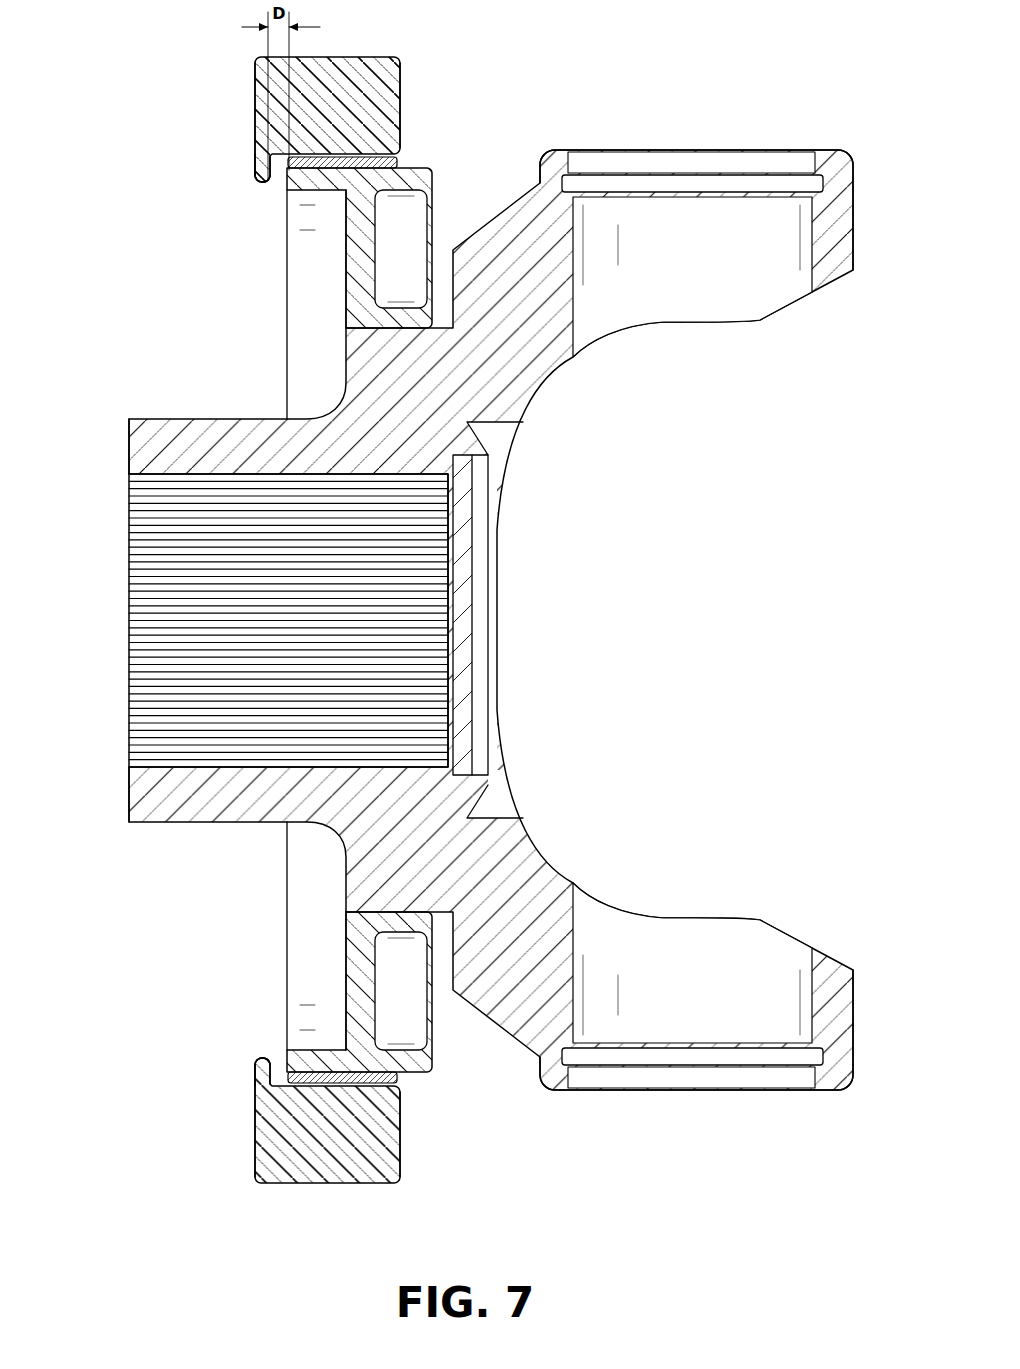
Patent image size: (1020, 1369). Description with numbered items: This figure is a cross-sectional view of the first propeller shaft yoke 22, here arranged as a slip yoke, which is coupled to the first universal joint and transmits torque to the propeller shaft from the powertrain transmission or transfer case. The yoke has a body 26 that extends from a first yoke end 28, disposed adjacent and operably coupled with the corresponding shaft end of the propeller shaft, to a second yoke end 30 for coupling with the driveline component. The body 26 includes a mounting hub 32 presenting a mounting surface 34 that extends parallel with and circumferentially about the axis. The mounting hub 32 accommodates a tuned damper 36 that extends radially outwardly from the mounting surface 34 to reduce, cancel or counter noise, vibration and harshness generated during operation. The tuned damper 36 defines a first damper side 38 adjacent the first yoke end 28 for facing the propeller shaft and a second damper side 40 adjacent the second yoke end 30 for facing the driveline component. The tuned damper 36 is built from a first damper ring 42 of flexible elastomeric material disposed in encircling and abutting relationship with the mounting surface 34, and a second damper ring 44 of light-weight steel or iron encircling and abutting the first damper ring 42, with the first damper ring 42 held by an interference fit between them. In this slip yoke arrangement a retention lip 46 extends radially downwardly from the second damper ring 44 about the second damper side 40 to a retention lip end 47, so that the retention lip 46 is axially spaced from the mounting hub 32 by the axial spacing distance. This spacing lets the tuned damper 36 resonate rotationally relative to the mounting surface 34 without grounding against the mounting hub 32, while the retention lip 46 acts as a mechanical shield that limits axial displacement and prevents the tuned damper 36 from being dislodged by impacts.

The first propeller shaft yoke 22 is at (183, 418).
The body 26 is at (210, 800).
The first yoke end 28 is at (855, 215).
The second yoke end 30 is at (129, 793).
The mounting hub 32 is at (365, 270).
The mounting surface 34 is at (370, 618).
The tuned damper 36 is at (322, 626).
The first damper side 38 is at (400, 90).
The second damper side 40 is at (255, 85).
The first damper ring 42 is at (330, 163).
The second damper ring 44 is at (340, 90).
The retention lip 46 is at (257, 165).
The retention lip end 47 is at (262, 183).